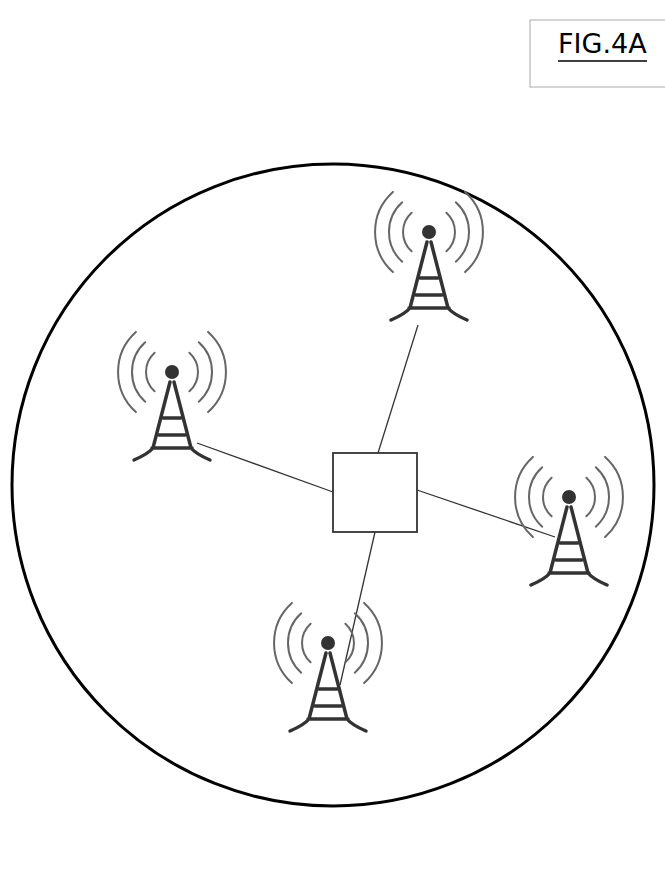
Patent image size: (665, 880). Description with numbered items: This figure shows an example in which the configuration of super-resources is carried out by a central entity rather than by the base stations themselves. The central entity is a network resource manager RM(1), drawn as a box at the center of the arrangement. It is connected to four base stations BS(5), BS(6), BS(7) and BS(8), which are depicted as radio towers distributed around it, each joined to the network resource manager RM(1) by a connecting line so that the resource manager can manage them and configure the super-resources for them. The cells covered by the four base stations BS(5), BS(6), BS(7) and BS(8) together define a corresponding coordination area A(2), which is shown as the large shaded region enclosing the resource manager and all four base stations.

The network resource manager 1 is at (376, 505).
The coordination area 2 is at (333, 485).
The base station 5 is at (116, 334).
The base station 6 is at (490, 203).
The base station 7 is at (585, 461).
The base station 8 is at (247, 696).